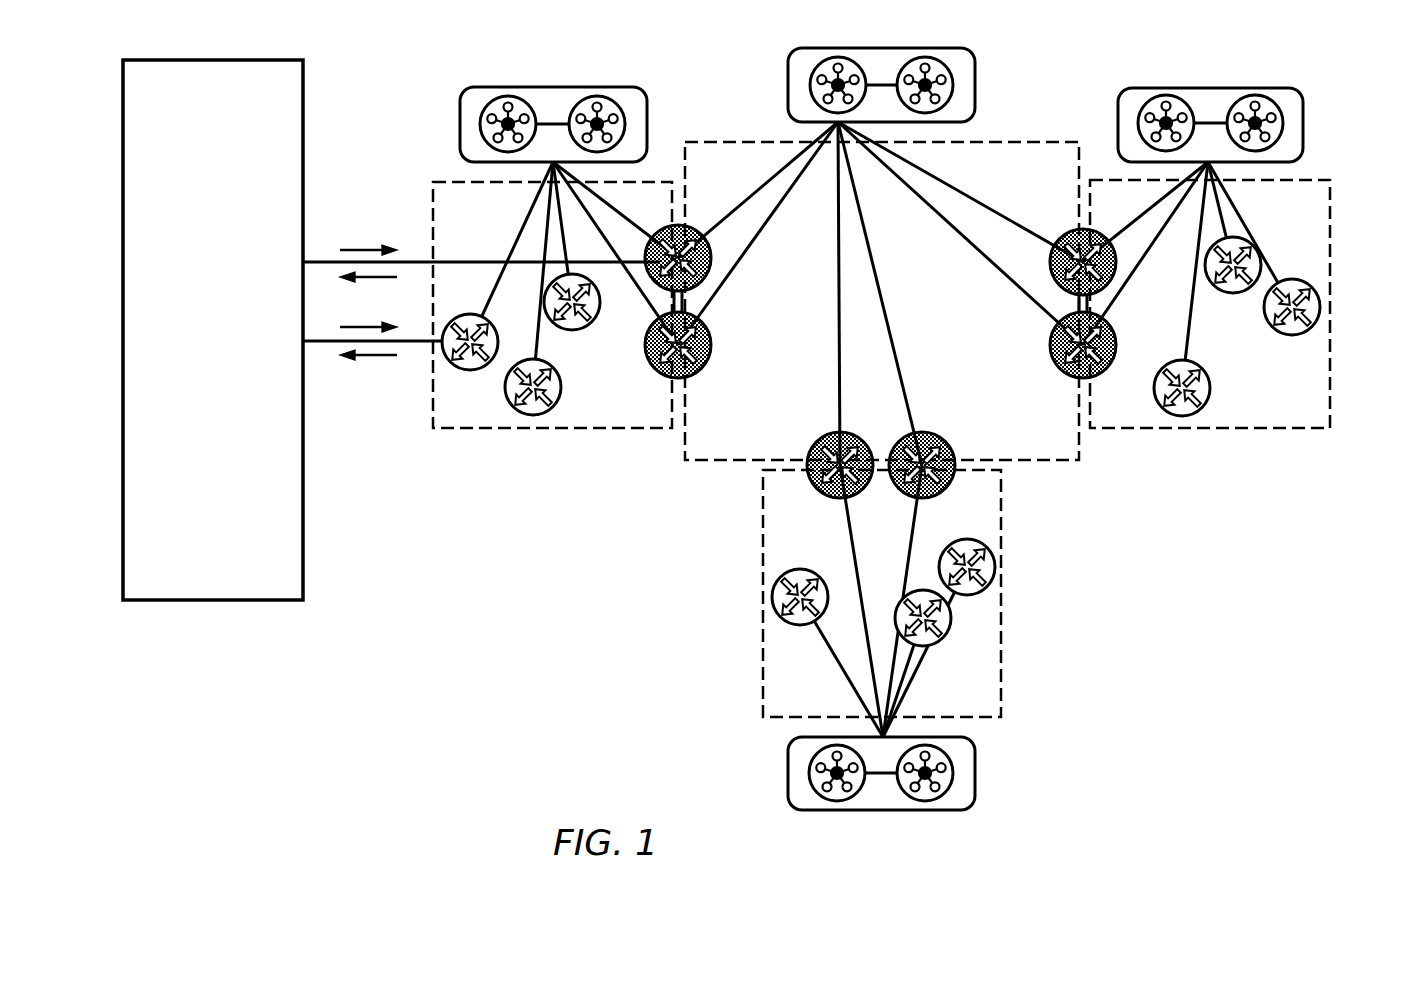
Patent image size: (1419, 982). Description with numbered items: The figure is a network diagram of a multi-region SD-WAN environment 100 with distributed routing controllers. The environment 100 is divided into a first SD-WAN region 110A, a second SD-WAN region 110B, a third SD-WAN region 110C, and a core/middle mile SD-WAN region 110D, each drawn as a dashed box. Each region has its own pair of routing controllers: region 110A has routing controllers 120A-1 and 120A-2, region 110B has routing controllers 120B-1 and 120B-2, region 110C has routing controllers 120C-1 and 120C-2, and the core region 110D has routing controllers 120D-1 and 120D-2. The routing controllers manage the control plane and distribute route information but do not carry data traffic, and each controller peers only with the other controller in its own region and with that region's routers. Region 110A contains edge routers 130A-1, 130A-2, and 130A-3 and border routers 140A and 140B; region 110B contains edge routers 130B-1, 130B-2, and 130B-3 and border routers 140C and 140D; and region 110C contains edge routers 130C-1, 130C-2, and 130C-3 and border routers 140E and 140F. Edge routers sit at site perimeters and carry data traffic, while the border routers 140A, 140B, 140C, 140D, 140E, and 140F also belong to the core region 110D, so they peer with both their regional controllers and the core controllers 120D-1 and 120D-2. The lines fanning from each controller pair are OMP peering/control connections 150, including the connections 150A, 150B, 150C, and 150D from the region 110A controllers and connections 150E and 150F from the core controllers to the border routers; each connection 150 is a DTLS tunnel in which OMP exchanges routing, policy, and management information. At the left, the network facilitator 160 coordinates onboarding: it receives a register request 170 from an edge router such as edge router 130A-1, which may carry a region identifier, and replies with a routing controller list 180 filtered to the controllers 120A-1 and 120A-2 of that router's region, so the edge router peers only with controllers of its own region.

The multi-region SD-WAN environment 100 is at (1208, 622).
The first SD-WAN region 110A is at (433, 194).
The second SD-WAN region 110B is at (763, 702).
The third SD-WAN region 110C is at (1330, 195).
The core/middle mile SD-WAN region 110D is at (1018, 142).
The routing controller 120A-1 is at (490, 100).
The routing controller 120A-2 is at (618, 100).
The routing controller 120B-1 is at (818, 797).
The routing controller 120B-2 is at (945, 797).
The routing controller 120C-1 is at (1145, 100).
The routing controller 120C-2 is at (1278, 100).
The routing controller 120D-1 is at (818, 63).
The routing controller 120D-2 is at (945, 63).
The edge router 130A-1 is at (450, 358).
The edge router 130A-2 is at (561, 387).
The edge router 130A-3 is at (578, 330).
The edge router 130B-1 is at (778, 618).
The edge router 130B-2 is at (938, 646).
The edge router 130B-3 is at (994, 560).
The edge router 130C-1 is at (1210, 398).
The edge router 130C-2 is at (1262, 262).
The edge router 130C-3 is at (1300, 334).
The border router 140A is at (690, 226).
The border router 140B is at (710, 360).
The border router 140C is at (820, 442).
The border router 140D is at (950, 442).
The border router 140E is at (1052, 355).
The border router 140F is at (1062, 232).
The OMP peering/control connection 150 is at (553, 124).
The OMP peering/control connection 150A is at (516, 241).
The OMP peering/control connection 150B is at (540, 284).
The OMP peering/control connection 150C is at (642, 296).
The OMP peering/control connection 150D is at (608, 206).
The OMP peering/control connection 150E is at (716, 226).
The OMP peering/control connection 150F is at (750, 252).
The network facilitator 160 is at (213, 330).
The register request 170 is at (372, 277).
The routing controller list 180 is at (360, 250).